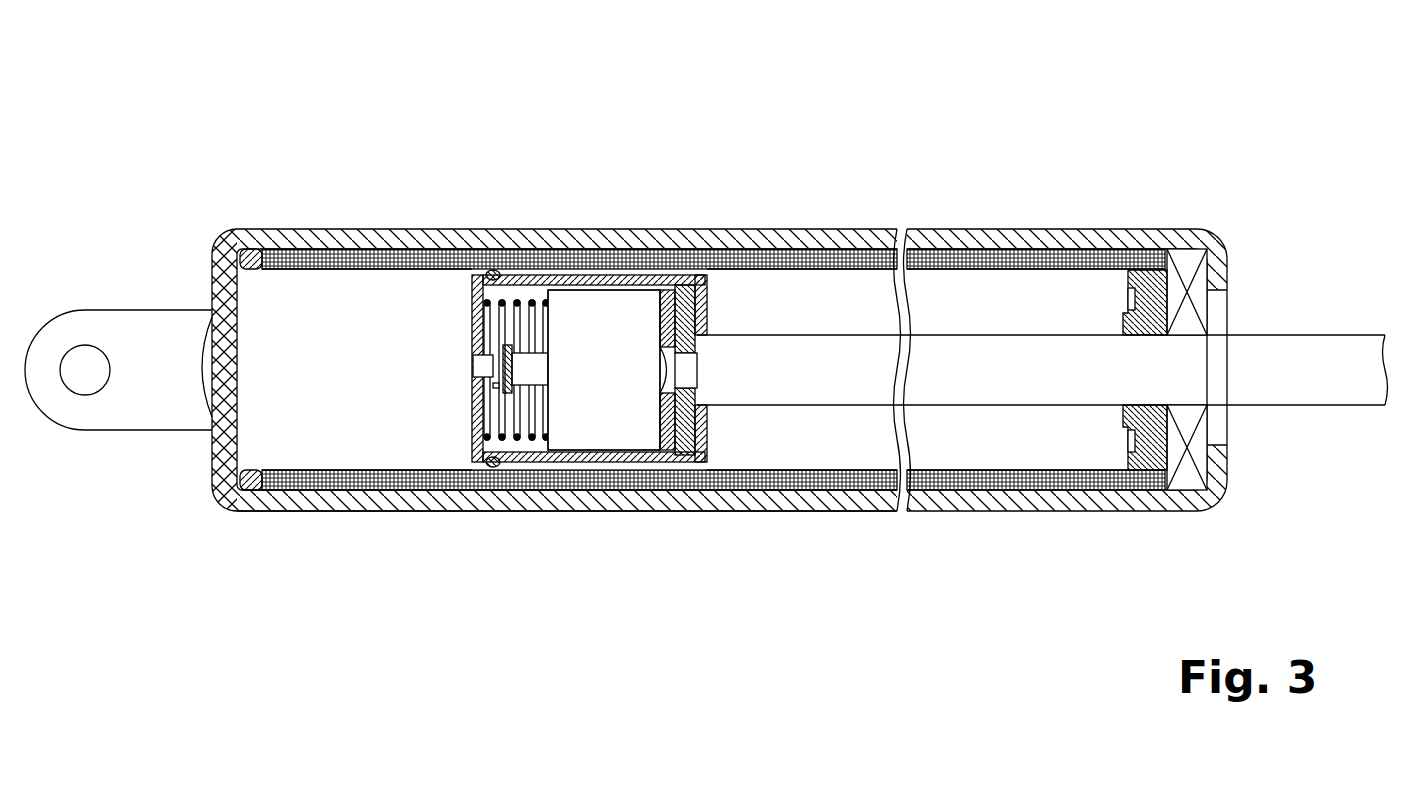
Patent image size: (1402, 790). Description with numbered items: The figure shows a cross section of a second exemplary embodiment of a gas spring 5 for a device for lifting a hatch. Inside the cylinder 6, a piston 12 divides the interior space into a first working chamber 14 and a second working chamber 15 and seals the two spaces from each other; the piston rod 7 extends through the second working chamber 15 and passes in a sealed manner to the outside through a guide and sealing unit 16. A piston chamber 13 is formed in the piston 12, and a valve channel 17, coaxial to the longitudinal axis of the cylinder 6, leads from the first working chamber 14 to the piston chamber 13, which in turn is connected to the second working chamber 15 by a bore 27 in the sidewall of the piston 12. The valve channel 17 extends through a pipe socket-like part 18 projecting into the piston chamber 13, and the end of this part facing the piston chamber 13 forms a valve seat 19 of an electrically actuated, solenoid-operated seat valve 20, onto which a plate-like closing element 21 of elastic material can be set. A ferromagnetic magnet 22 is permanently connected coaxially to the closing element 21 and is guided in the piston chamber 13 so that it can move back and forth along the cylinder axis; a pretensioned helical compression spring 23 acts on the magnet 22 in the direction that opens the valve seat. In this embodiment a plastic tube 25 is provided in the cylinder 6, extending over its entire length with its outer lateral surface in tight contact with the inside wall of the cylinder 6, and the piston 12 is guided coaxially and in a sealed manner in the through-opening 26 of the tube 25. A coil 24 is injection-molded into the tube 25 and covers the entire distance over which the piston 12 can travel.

The vibration damper 5 is at (865, 173).
The cylinder 6 is at (318, 243).
The piston rod 7 is at (1307, 348).
The piston 12 is at (583, 283).
The piston chamber 13 is at (499, 270).
The first working chamber 14 is at (342, 440).
The second working chamber 15 is at (975, 440).
The guide and sealing unit 16 is at (1147, 242).
The valve channel 17 is at (477, 372).
The pipe socket-like part 18 is at (490, 357).
The valve seat 19 is at (498, 386).
The seat valve 20 is at (515, 448).
The closing element 21 is at (500, 348).
The magnet 22 is at (618, 350).
The spring 23 is at (524, 288).
The coil 24 is at (438, 490).
The tube 25 is at (295, 495).
The through-opening 26 is at (770, 455).
The bore 27 is at (538, 453).